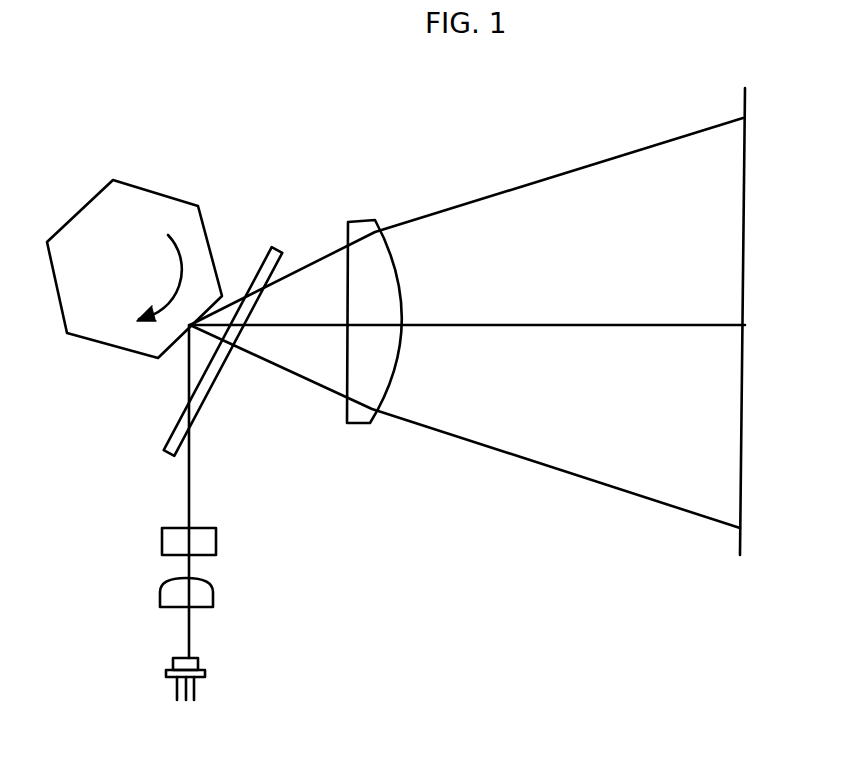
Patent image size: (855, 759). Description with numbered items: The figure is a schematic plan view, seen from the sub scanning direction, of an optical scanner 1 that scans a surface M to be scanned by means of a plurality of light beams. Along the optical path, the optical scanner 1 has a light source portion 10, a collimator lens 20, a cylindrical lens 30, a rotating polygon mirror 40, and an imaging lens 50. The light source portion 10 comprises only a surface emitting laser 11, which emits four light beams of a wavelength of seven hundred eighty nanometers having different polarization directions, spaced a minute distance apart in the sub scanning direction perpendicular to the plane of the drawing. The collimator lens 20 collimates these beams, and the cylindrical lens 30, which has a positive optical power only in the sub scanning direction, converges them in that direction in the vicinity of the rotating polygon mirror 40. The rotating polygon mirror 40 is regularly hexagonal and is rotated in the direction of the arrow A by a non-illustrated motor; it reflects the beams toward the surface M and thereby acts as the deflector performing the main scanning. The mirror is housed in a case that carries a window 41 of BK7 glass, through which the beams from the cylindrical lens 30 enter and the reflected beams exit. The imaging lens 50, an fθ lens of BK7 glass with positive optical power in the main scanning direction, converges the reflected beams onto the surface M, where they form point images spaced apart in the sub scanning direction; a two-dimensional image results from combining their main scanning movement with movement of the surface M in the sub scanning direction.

The optical scanner 1 is at (418, 723).
The light source portion 10 is at (191, 686).
The surface emitting laser 11 is at (198, 663).
The collimator lens 20 is at (208, 598).
The cylindrical lens 30 is at (215, 543).
The rotating polygon mirror 40 is at (98, 323).
The window 41 is at (163, 450).
The imaging lens 50 is at (362, 422).
The surface to be scanned M is at (737, 542).
The arrow A is at (159, 278).